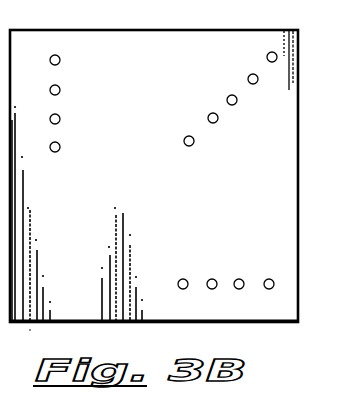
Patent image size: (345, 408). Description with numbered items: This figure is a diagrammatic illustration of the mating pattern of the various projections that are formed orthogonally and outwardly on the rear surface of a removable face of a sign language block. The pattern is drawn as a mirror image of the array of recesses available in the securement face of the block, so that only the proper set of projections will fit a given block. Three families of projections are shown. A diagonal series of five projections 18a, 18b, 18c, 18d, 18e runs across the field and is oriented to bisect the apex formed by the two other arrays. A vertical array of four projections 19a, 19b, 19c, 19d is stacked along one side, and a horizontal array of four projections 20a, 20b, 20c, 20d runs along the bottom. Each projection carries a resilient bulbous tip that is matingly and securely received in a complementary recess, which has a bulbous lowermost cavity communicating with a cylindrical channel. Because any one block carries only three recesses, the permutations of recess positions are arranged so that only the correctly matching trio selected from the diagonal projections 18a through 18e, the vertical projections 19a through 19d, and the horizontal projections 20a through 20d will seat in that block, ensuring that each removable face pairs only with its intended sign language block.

The diagonal projection 18a is at (267, 59).
The diagonal projection 18b is at (258, 81).
The diagonal projection 18c is at (227, 98).
The diagonal projection 18d is at (249, 145).
The diagonal projection 18e is at (188, 128).
The vertical projection 19a is at (112, 63).
The vertical projection 19b is at (110, 96).
The vertical projection 19c is at (110, 126).
The vertical projection 19d is at (110, 154).
The horizontal projection 20a is at (286, 265).
The horizontal projection 20b is at (239, 279).
The horizontal projection 20c is at (226, 266).
The horizontal projection 20d is at (183, 279).